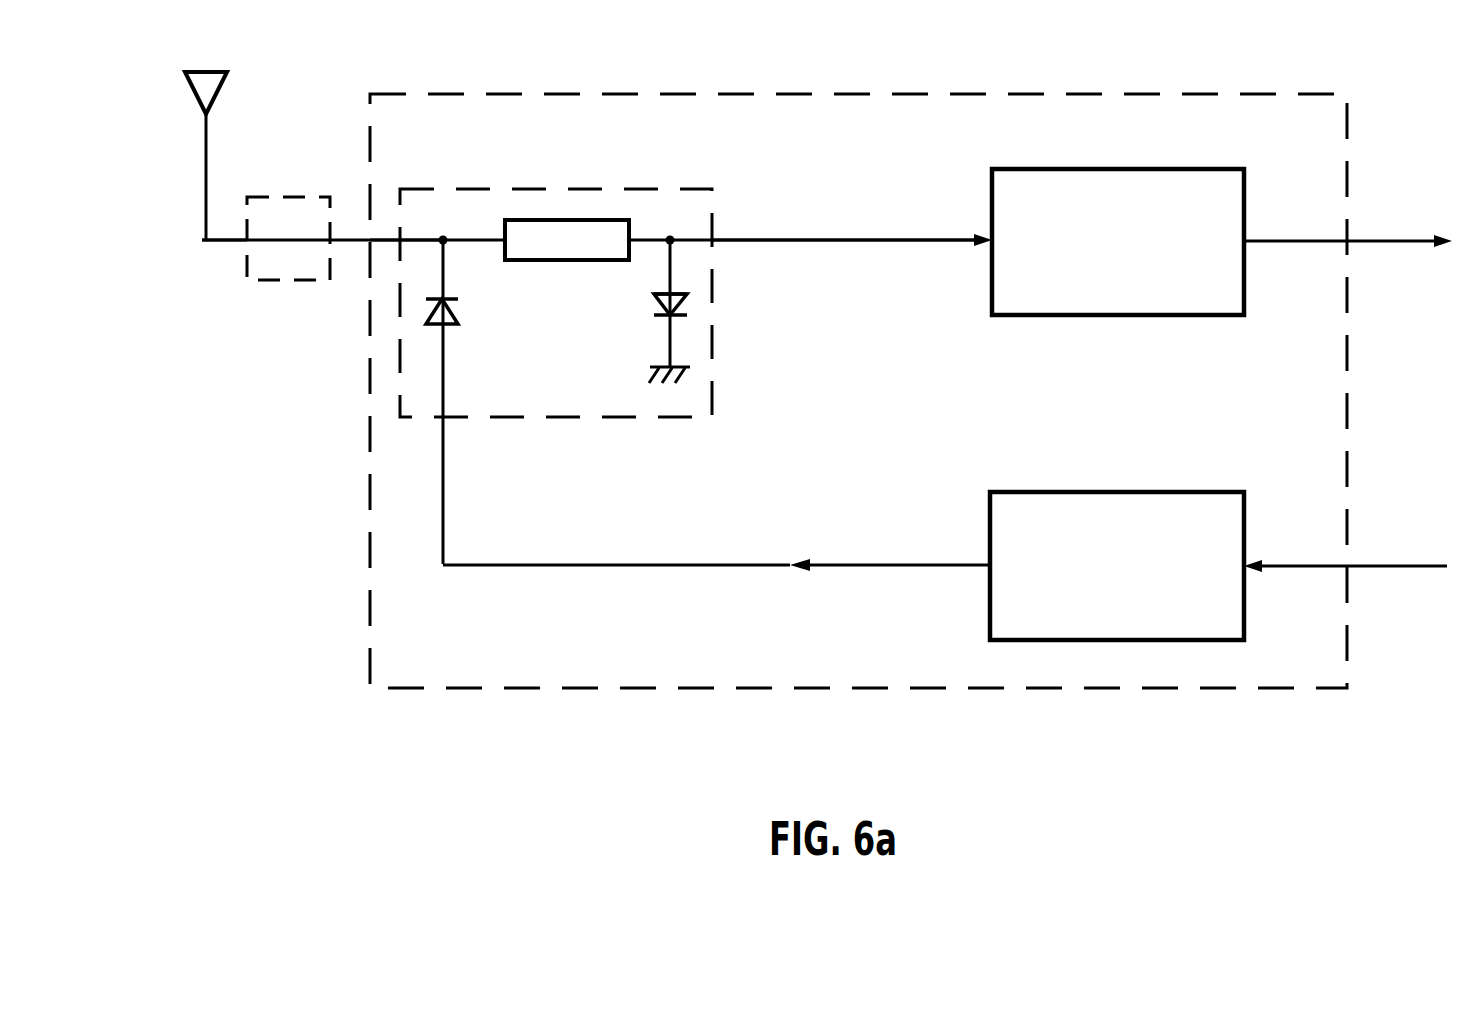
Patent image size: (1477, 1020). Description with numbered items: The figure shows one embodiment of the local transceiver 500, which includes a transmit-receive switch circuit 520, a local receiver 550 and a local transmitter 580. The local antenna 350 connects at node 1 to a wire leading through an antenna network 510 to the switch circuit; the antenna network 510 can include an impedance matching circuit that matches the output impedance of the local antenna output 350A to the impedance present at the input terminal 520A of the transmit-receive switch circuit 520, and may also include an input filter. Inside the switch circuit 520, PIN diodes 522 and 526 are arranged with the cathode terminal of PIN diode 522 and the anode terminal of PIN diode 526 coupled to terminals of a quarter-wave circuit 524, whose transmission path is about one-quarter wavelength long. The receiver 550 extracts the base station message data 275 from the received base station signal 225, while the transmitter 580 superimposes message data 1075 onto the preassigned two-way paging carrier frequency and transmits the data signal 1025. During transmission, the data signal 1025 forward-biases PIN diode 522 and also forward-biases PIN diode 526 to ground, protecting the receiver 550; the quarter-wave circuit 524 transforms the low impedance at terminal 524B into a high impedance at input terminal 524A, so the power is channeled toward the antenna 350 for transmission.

The antenna 350 is at (193, 90).
The local antenna output 350A is at (202, 238).
The antenna node 1 is at (224, 218).
The antenna network 510 is at (285, 195).
The transmit-receive switch circuit 520 is at (592, 415).
The input terminal of the transmit-receive switch circuit 520A is at (387, 242).
The PIN diode 522 is at (452, 312).
The quarter-wave circuit 524 is at (553, 218).
The input terminal of the quarter-wave circuit 524A is at (475, 237).
The terminal of the quarter-wave circuit 524B is at (650, 236).
The PIN diode 526 is at (652, 298).
The received base station signal 225 is at (888, 240).
The local receiver 550 is at (1204, 305).
The base station message data 275 is at (1397, 235).
The local transmitter 580 is at (1030, 495).
The message data 1075 is at (1415, 560).
The data signal 1025 is at (752, 566).
The local transceiver 500 is at (577, 680).